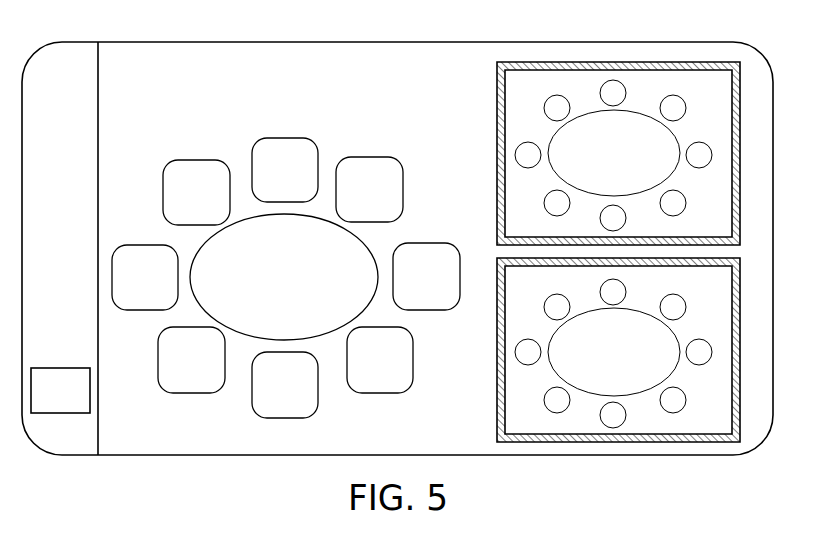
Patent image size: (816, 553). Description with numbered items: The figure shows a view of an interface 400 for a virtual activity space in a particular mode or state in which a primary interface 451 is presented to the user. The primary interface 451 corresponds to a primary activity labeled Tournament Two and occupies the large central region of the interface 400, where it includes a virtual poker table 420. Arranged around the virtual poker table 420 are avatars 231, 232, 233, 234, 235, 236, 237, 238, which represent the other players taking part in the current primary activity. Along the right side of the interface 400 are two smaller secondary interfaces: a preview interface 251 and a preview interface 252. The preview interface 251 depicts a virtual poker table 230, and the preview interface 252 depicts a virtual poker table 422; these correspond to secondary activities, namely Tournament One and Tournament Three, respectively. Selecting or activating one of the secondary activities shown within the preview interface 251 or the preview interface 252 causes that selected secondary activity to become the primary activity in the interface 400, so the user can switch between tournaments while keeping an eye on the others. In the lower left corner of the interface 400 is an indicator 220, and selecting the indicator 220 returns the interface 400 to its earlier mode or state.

The interface 400 is at (108, 42).
The indicator 220 is at (60, 390).
The primary interface 451 is at (174, 126).
The virtual poker table 420 is at (284, 277).
The avatar 231 is at (285, 170).
The avatar 232 is at (369, 189).
The avatar 233 is at (426, 276).
The avatar 234 is at (380, 360).
The avatar 235 is at (285, 385).
The avatar 236 is at (191, 360).
The avatar 237 is at (145, 277).
The avatar 238 is at (196, 192).
The preview interface 251 is at (586, 153).
The preview interface 252 is at (586, 350).
The virtual poker table 230 is at (613, 155).
The virtual poker table 422 is at (613, 353).